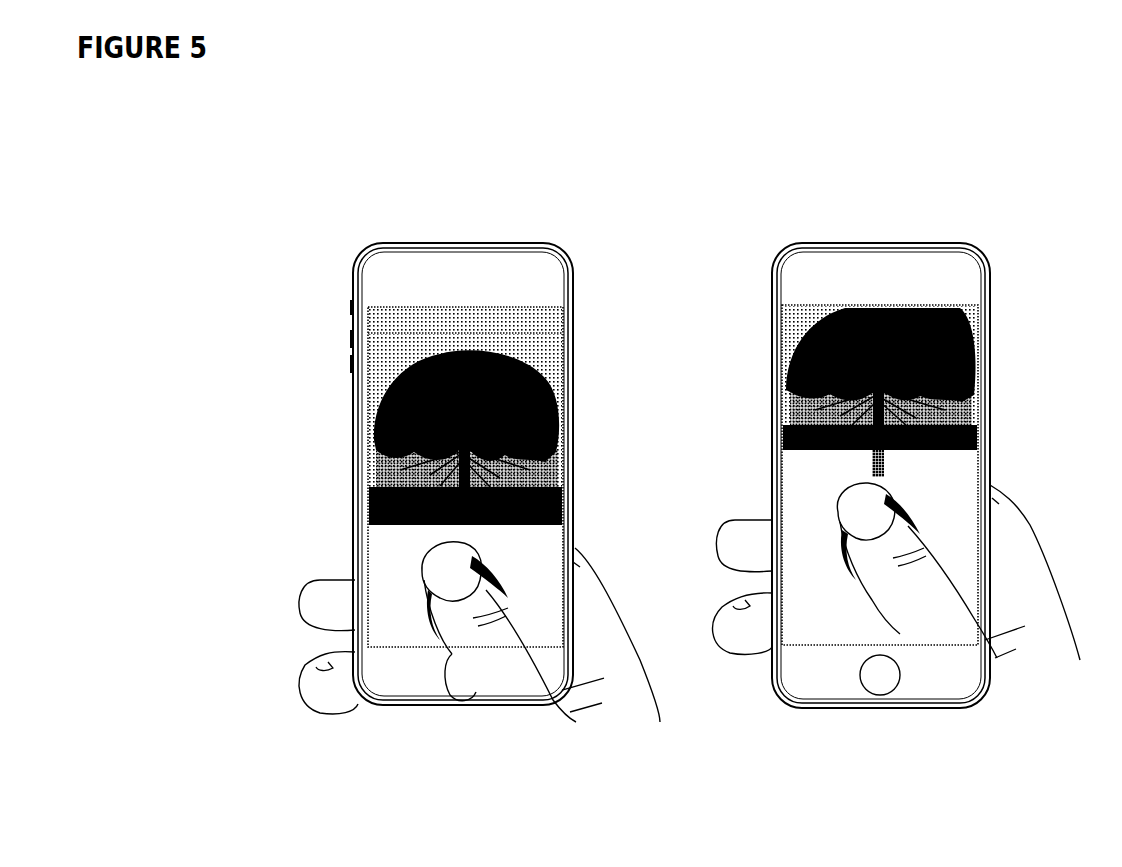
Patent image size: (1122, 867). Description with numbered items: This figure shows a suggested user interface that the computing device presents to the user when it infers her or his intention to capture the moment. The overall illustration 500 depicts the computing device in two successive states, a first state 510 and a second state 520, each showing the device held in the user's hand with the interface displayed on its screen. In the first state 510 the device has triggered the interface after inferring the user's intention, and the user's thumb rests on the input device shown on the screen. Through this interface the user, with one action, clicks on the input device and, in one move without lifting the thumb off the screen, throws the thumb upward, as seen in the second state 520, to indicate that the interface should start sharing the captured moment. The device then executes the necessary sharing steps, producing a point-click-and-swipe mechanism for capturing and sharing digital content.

The user interface sequence 500 is at (622, 104).
The first screen state of mobile device 510 is at (457, 197).
The second screen state of mobile device 520 is at (883, 197).